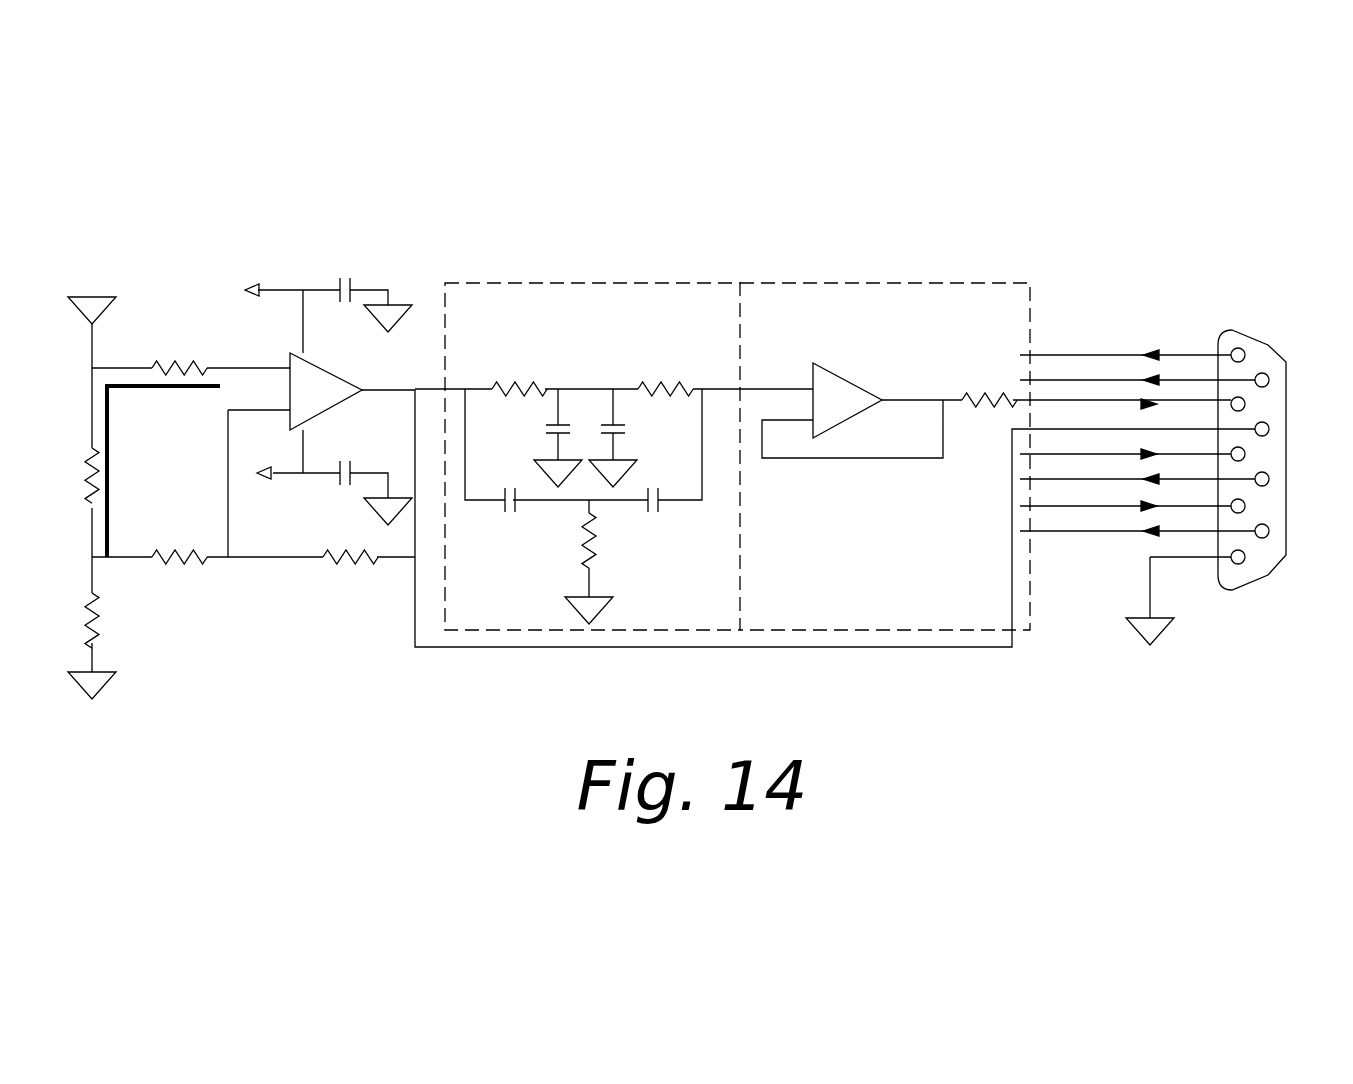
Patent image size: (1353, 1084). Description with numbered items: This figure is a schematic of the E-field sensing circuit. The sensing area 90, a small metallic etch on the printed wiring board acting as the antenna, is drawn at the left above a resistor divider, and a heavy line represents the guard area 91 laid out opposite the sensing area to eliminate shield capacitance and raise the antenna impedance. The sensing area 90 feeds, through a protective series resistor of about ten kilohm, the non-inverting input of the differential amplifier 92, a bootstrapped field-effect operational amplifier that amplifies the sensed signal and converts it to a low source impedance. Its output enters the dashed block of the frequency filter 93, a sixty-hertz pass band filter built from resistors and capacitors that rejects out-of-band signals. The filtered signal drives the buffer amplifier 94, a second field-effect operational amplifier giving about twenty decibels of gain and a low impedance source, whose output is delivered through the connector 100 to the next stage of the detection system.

The sensing area 90 is at (108, 265).
The guard area 91 is at (137, 388).
The differential amplifier 92 is at (333, 373).
The frequency filter 93 is at (620, 283).
The buffer amplifier 94 is at (870, 282).
The connector J1 100 is at (1270, 350).